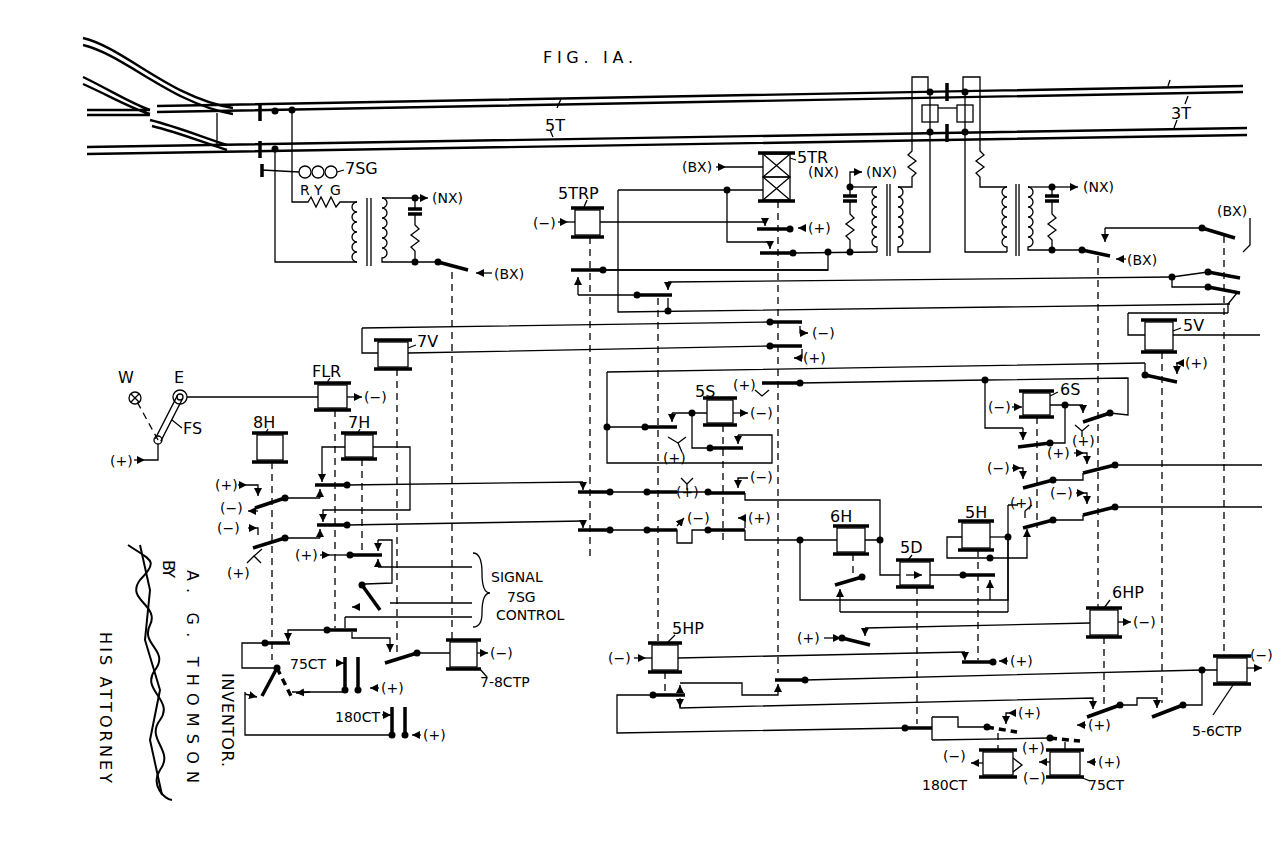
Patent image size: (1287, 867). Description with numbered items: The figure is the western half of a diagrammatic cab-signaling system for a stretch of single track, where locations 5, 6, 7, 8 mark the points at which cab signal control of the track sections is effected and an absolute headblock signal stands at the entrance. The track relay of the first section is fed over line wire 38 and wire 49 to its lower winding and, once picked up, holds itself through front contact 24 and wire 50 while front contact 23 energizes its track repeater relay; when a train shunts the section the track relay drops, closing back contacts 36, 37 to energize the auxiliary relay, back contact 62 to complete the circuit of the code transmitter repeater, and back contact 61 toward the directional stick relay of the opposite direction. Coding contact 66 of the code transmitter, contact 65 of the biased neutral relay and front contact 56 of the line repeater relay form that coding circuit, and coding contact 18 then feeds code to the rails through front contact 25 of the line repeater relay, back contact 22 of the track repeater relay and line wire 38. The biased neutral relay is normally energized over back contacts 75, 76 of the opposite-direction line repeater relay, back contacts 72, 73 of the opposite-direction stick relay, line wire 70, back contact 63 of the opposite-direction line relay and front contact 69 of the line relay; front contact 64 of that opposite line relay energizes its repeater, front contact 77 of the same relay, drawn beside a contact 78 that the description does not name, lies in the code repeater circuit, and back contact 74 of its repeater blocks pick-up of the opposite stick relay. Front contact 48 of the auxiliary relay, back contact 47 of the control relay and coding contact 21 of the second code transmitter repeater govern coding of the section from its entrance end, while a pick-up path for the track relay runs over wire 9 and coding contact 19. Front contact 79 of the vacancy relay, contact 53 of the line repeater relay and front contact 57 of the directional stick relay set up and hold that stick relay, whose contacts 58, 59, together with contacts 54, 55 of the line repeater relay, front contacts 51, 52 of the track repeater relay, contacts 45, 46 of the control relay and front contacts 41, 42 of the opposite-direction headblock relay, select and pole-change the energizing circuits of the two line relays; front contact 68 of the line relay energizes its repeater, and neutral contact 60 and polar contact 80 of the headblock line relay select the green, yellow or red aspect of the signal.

The cab signal control location 5 is at (946, 144).
The cab signal control location 6 is at (945, 83).
The cab signal control location 7 is at (272, 160).
The cab signal control location 8 is at (257, 102).
The wire 9 is at (897, 279).
The coding contact 18 is at (1218, 263).
The coding contact 19 is at (1232, 299).
The coding contact 21 is at (455, 260).
The contact of track repeater relay 5TRP 22 is at (582, 261).
The front contact of track relay 5TR 23 is at (785, 218).
The front contact of track relay 5TR 24 is at (786, 243).
The contact of repeater relay 5HP 25 is at (652, 287).
The back contact of track relay 5TR 36 is at (774, 332).
The back contact of track relay 5TR 37 is at (775, 356).
The line wire 38 is at (690, 270).
The front contact of relay 8H 41 is at (276, 492).
The front contact of relay 8H 42 is at (272, 550).
The contact of control relay FLR 45 is at (336, 476).
The contact of control relay FLR 46 is at (317, 525).
The back contact of relay FLR 47 is at (330, 628).
The front contact of relay 7V 48 is at (400, 659).
The wire 49 is at (657, 190).
The wire 50 is at (727, 203).
The front contact of repeater relay 5TRP 51 is at (592, 504).
The front contact of repeater relay 5TRP 52 is at (593, 543).
The contact of repeater relay 5HP 53 is at (641, 417).
The contact of repeater relay 5HP 54 is at (652, 482).
The contact of repeater relay 5HP 55 is at (652, 521).
The front contact of repeater relay 5HP 56 is at (660, 699).
The front contact of stick relay 5S 57 is at (737, 452).
The front contact of stick relay 5S 58 is at (721, 482).
The front contact of stick relay 5S 59 is at (725, 544).
The neutral contact of relay 7H 60 is at (359, 546).
The back contact of track relay 5TR 61 is at (786, 394).
The back contact of track relay 5TR 62 is at (780, 682).
The back contact of line relay 6H 63 is at (860, 586).
The front contact of line relay 6H 64 is at (868, 638).
The contact of biased neutral relay 5D 65 is at (905, 726).
The coding contact of code transmitter 180CT 66 is at (1027, 724).
The front contact of line relay 5H 68 is at (982, 649).
The front contact of line relay 5H 69 is at (972, 578).
The line wire 70 is at (1008, 590).
The back contact of stick relay 6S 72 is at (1042, 473).
The back contact of stick relay 6S 73 is at (1035, 525).
The back contact of repeater relay 6HP 74 is at (1102, 405).
The contact of repeater relay 6HP 75 is at (1105, 458).
The contact of repeater relay 6HP 76 is at (1105, 499).
The front contact of line relay 6H 77 is at (1108, 700).
The contact 78 is at (1171, 700).
The front contact of relay 5V 79 is at (1166, 390).
The polar contact of relay 7H 80 is at (357, 587).